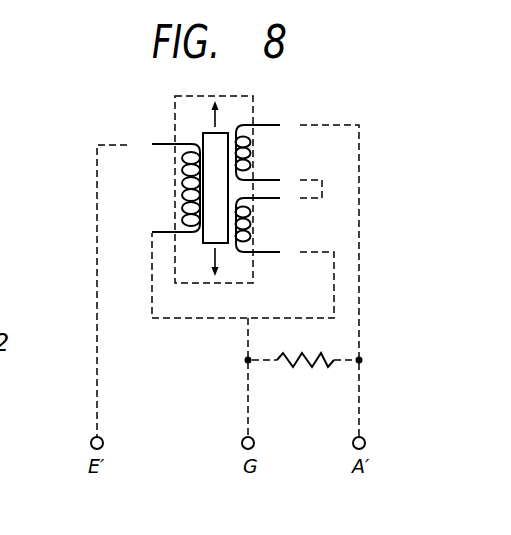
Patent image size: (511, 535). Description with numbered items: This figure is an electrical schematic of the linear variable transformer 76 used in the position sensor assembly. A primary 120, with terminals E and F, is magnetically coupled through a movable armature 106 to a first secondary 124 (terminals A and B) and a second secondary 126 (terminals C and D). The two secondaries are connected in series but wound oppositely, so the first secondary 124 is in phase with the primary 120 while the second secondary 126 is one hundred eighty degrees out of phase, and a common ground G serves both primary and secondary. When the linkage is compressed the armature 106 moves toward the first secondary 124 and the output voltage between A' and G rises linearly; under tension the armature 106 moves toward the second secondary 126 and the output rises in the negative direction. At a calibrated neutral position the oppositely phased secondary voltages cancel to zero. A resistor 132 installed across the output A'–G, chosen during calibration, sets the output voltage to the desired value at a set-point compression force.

The armature 106 is at (203, 133).
The linear variable transformer 76 is at (254, 96).
The primary 120 is at (174, 190).
The first secondary 124 is at (258, 152).
The second secondary 126 is at (258, 224).
The resistor 132 is at (325, 351).